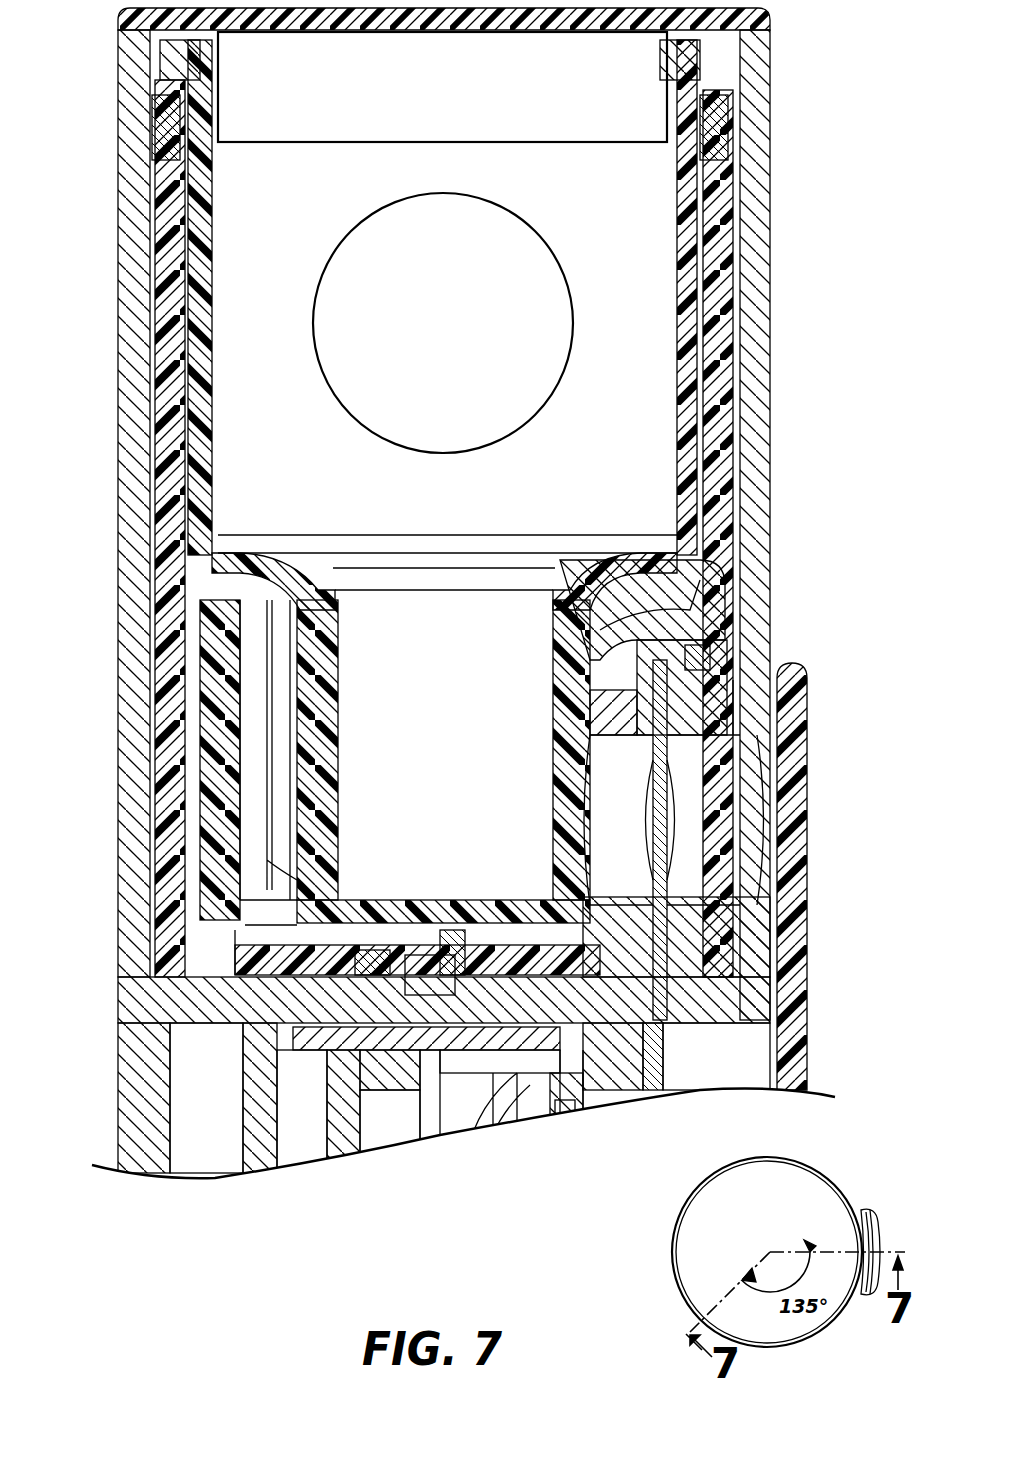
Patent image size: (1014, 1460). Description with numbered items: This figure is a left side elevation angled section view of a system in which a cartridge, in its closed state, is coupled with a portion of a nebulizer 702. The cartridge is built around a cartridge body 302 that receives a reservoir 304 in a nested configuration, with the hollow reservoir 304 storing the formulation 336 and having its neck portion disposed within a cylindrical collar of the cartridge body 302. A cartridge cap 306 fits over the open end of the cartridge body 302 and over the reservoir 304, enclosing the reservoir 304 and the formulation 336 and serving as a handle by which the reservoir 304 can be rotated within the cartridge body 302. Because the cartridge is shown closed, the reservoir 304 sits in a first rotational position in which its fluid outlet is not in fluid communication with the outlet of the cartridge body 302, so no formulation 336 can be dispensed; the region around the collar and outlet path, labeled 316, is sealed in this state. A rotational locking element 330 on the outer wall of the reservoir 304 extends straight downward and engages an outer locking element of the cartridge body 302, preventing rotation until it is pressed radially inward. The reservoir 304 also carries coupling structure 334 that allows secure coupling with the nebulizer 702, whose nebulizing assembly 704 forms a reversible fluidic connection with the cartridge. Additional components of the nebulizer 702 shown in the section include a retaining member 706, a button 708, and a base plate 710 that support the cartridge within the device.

The cartridge body 302 is at (175, 372).
The reservoir 304 is at (207, 272).
The cartridge cap 306 is at (125, 22).
The collar 316 is at (615, 597).
The rotational locking element 330 is at (215, 830).
The coupling structure 334 is at (148, 160).
The formulation 336 is at (443, 323).
The nebulizer 702 is at (765, 322).
The nebulizing assembly 704 is at (262, 1100).
The retaining ring 706 is at (650, 640).
The button 708 is at (735, 800).
The base plate 710 is at (235, 945).